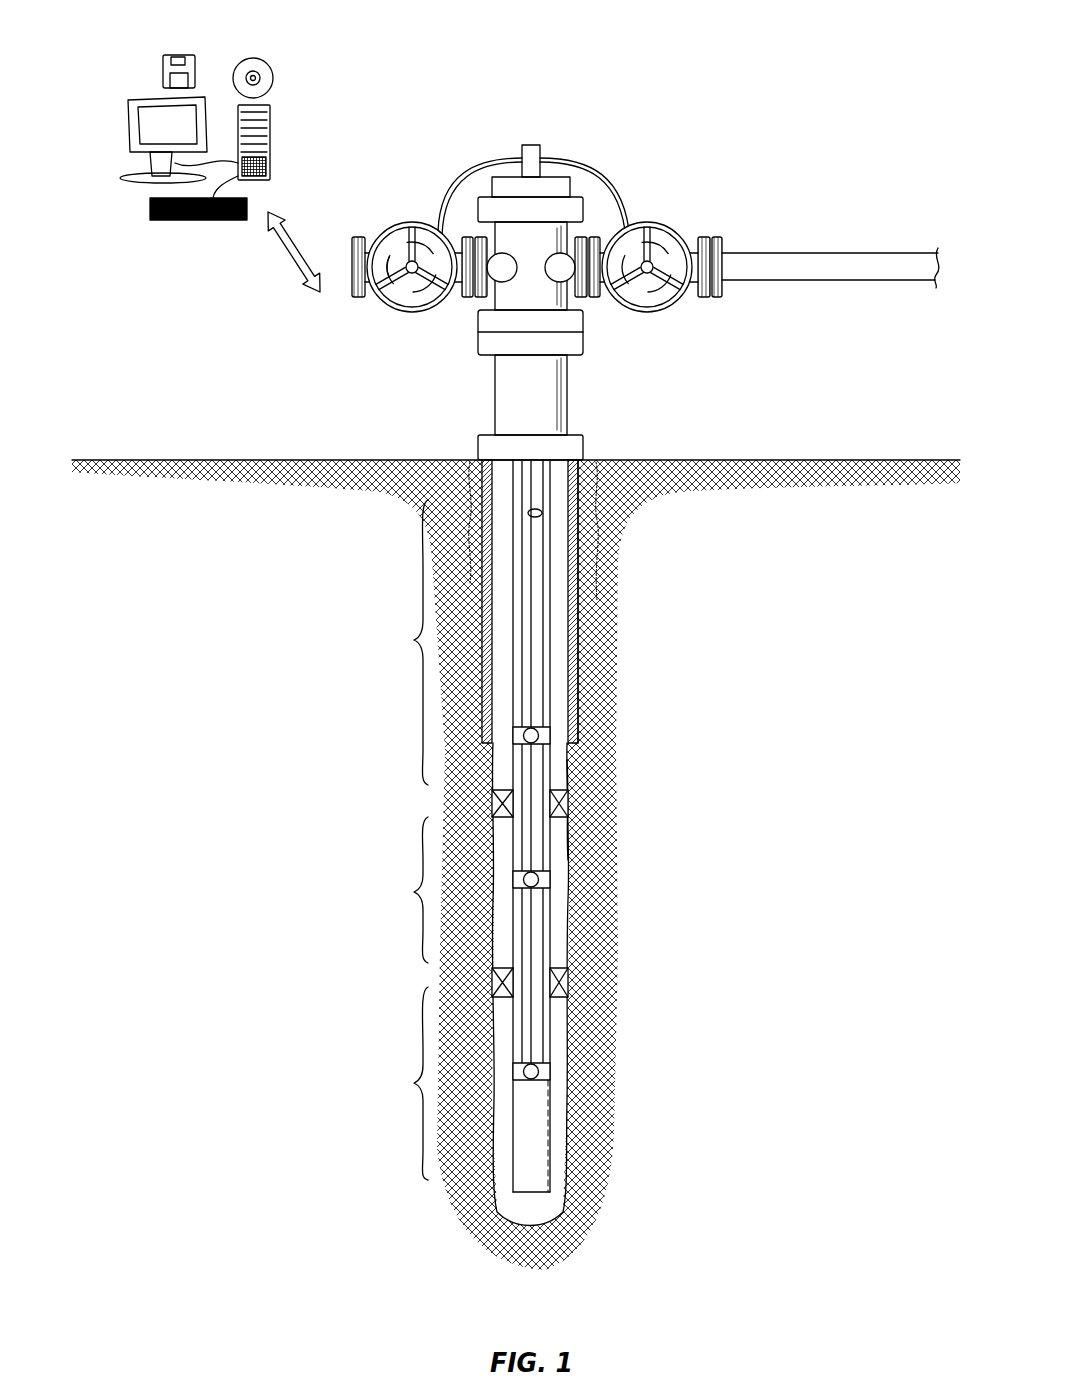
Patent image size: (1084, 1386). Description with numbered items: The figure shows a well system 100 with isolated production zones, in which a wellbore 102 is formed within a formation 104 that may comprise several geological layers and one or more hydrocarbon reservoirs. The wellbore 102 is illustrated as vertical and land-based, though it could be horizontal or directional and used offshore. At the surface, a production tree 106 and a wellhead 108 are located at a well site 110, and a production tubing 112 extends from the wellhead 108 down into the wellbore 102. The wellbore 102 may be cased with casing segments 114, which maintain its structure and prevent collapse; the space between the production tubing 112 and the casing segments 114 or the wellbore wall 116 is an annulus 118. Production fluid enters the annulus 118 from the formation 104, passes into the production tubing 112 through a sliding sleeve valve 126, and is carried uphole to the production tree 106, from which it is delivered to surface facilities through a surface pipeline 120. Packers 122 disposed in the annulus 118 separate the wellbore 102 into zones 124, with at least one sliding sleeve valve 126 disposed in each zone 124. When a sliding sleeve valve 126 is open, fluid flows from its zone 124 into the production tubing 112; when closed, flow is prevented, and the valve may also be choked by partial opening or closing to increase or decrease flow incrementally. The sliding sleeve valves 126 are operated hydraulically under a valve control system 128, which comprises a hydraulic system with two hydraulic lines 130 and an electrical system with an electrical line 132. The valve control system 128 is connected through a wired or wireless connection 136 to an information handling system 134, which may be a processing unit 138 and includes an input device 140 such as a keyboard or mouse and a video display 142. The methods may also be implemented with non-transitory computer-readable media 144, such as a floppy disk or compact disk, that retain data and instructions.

The well system 100 is at (778, 126).
The wellbore 102 is at (570, 747).
The formation 104 is at (827, 541).
The production tree 106 is at (482, 318).
The wellhead 108 is at (553, 395).
The well site 110 is at (452, 436).
The production tubing 112 is at (555, 480).
The casing segments 114 is at (585, 640).
The wellbore wall 116 is at (572, 775).
The annulus 118 is at (565, 615).
The surface pipeline 120 is at (885, 274).
The packers 122 is at (570, 800).
The zones 124 is at (397, 840).
The sliding sleeve valve 126 is at (550, 736).
The valve control system 128 is at (553, 581).
The hydraulic lines 130 is at (542, 513).
The electrical line 132 is at (522, 540).
The information handling system 134 is at (195, 146).
The connection 136 is at (282, 255).
The processing unit 138 is at (271, 120).
The input device 140 is at (157, 221).
The video display 142 is at (134, 134).
The non-transitory computer-readable media 144 is at (250, 55).